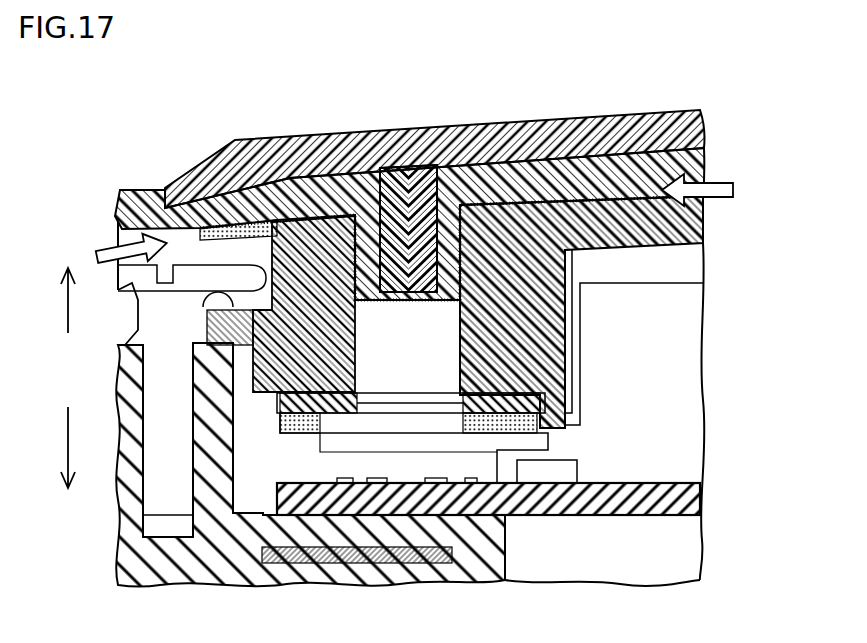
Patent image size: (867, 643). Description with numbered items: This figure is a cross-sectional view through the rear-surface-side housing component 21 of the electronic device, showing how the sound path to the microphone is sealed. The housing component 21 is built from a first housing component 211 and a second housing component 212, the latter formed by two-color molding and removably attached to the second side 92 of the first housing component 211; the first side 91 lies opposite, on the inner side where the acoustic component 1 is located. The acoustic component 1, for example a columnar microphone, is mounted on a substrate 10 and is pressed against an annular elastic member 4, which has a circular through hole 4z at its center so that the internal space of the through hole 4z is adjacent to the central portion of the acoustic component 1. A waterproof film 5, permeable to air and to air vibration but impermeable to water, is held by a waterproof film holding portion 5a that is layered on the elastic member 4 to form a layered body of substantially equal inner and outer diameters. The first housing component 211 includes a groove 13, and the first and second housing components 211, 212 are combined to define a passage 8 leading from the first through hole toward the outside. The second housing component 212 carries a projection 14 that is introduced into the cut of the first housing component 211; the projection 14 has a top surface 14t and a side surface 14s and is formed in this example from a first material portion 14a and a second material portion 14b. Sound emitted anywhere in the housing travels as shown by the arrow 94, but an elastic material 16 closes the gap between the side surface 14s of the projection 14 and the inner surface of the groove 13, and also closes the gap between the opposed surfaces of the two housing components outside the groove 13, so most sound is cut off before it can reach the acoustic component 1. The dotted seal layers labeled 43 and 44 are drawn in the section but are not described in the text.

The housing component 21 is at (410, 172).
The first housing component 211 is at (480, 205).
The second housing component 212 is at (543, 135).
The groove 13 is at (370, 250).
The first seal 43 is at (283, 222).
The second seal 44 is at (333, 222).
The arrow 94 is at (110, 243).
The second side 92 is at (65, 311).
The first side 91 is at (65, 445).
The passage 8 is at (385, 358).
The projection 14 is at (596, 312).
The first material portion 14a is at (410, 295).
The second material portion 14b is at (388, 300).
The side surface 14s is at (560, 272).
The top surface 14t is at (470, 365).
The substrate 10 is at (693, 490).
The waterproof film holding portion 5a is at (285, 428).
The elastic member 4 is at (300, 412).
The through hole 4z is at (463, 413).
The waterproof film 5 is at (482, 413).
The acoustic component 1 is at (333, 453).
The elastic material 16 is at (405, 300).